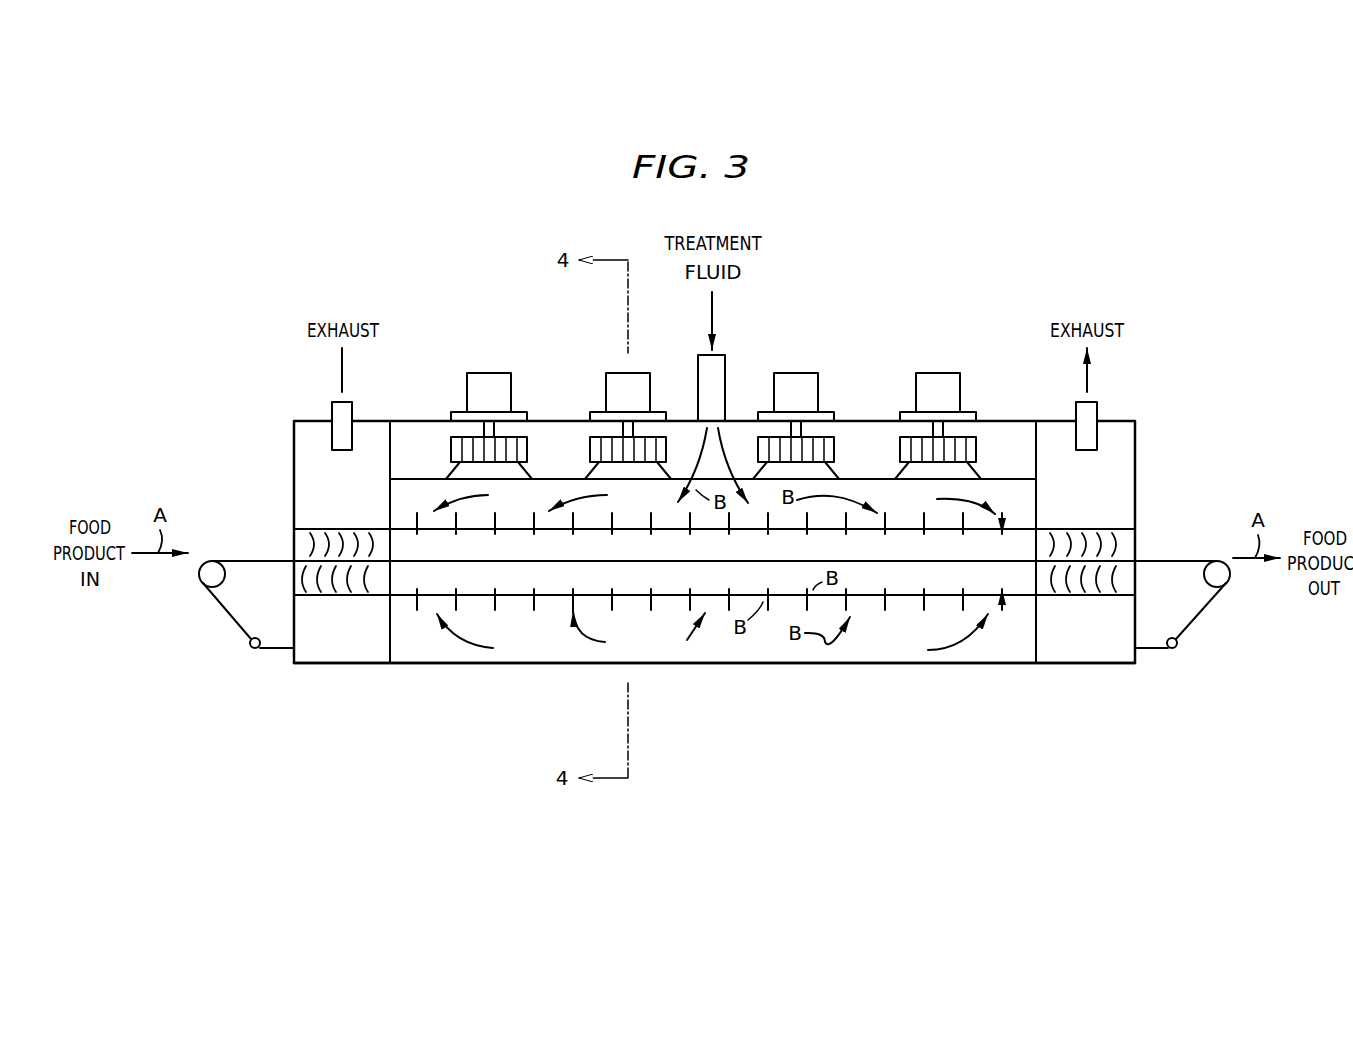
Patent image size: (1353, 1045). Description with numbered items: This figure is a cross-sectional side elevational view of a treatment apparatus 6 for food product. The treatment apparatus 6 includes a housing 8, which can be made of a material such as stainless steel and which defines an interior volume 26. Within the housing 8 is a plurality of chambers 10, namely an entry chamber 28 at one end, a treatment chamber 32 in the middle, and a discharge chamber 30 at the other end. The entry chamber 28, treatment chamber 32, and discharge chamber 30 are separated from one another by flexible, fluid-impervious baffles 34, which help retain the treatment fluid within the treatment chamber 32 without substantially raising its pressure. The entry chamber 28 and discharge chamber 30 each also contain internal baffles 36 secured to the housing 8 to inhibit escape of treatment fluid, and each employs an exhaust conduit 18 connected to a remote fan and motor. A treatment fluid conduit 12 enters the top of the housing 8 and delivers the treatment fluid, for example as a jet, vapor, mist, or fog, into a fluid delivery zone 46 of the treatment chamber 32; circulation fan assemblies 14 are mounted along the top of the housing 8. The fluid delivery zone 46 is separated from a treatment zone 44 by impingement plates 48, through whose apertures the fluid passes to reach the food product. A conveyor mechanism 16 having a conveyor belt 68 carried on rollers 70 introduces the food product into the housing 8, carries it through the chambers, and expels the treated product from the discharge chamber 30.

The treatment apparatus 6 is at (930, 266).
The housing 8 is at (1142, 452).
The plurality of chambers 10 is at (1083, 655).
The treatment fluid conduit 12 is at (727, 362).
The circulation fan assemblies 14 is at (942, 372).
The conveyor mechanism 16 is at (1208, 621).
The exhaust conduits 18 is at (1097, 412).
The interior volume 26 is at (549, 630).
The entry chamber 28 is at (313, 617).
The discharge chamber 30 is at (1125, 500).
The treatment chamber 32 is at (874, 630).
The baffles 34 is at (1040, 595).
The internal baffles 36 is at (1125, 545).
The treatment zone 44 is at (643, 591).
The fluid delivery zone 46 is at (643, 644).
The impingement plates 48 is at (903, 598).
The conveyor belt 68 is at (1162, 563).
The rollers 70 is at (1173, 650).